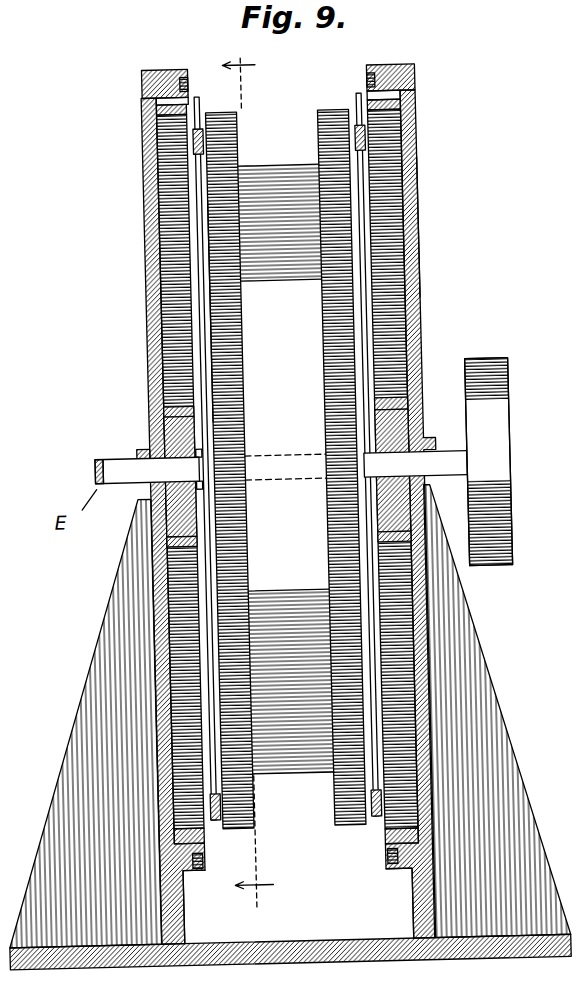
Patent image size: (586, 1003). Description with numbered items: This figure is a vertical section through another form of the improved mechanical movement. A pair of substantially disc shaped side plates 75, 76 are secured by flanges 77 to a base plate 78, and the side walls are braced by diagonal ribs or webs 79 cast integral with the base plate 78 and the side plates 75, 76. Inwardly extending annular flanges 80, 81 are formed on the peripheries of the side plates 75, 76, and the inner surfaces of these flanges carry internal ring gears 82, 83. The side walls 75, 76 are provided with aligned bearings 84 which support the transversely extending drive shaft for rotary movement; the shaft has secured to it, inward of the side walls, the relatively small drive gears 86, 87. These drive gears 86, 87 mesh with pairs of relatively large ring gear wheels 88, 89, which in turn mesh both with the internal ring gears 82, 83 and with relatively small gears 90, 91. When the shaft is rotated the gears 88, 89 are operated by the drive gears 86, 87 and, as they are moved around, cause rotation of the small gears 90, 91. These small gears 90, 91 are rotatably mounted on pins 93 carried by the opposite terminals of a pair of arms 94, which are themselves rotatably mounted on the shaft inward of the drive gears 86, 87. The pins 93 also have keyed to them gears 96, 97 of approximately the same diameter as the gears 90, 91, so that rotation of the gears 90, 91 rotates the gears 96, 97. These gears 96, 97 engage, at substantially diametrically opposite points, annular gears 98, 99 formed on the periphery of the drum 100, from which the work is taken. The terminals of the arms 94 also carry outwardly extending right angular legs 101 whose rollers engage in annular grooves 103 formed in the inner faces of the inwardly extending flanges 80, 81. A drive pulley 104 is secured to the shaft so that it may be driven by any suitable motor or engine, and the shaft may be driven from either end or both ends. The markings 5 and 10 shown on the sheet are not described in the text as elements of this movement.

The frame member 5 is at (427, 206).
The direction arrow / section line 10 is at (245, 477).
The side plate 75 is at (154, 230).
The side plate 76 is at (421, 281).
The flanges 77 is at (177, 912).
The base plate 78 is at (342, 964).
The diagonal ribs or webs 79 is at (71, 765).
The annular flange 80 is at (176, 69).
The annular flange 81 is at (420, 71).
The internal ring gear 82 is at (168, 100).
The internal ring gear 83 is at (406, 95).
The bearings 84 is at (141, 448).
The drive gear 86 is at (172, 430).
The drive gear 87 is at (392, 434).
The ring gear wheel 88 is at (168, 104).
The ring gear wheel 89 is at (424, 103).
The small gear 90 is at (181, 142).
The small gear 91 is at (376, 144).
The pins 93 is at (209, 128).
The arms 94 is at (200, 485).
The gear 96 is at (250, 109).
The gear 97 is at (342, 111).
The annular gear 98 is at (227, 310).
The annular gear 99 is at (424, 251).
The drum 100 is at (286, 469).
The right angular legs 101 is at (212, 141).
The annular grooves 103 is at (200, 78).
The drive pulley 104 is at (500, 432).